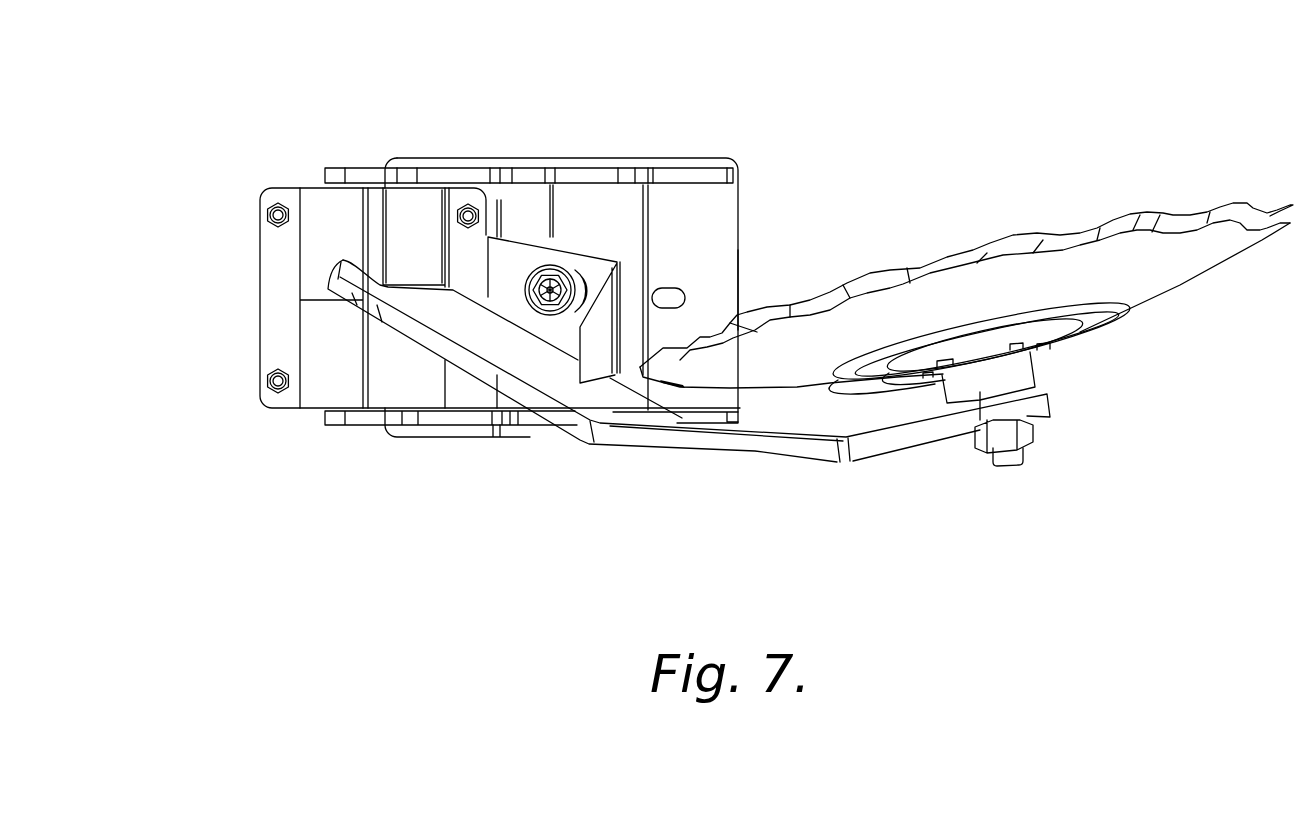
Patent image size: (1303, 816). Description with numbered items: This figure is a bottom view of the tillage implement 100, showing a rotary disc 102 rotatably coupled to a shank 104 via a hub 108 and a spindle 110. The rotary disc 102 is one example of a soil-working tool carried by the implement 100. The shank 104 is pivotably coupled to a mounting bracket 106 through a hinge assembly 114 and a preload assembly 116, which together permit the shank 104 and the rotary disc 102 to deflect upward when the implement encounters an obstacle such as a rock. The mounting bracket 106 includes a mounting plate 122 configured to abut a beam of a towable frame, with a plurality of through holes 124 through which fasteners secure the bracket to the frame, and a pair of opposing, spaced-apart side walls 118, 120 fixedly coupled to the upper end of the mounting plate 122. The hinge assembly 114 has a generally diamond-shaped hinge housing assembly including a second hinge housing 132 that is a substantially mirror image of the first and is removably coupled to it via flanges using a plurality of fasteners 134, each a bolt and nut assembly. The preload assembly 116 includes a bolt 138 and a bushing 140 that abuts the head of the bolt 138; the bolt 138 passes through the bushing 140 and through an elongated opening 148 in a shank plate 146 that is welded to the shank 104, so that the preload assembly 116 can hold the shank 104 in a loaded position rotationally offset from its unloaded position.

The tillage implement 100 is at (170, 104).
The rotary disc 102 is at (1163, 268).
The shank 104 is at (658, 437).
The mounting bracket 106 is at (728, 282).
The hub 108 is at (1022, 373).
The spindle 110 is at (1028, 433).
The hinge assembly 114 is at (222, 299).
The preload assembly 116 is at (531, 207).
The side wall 118 is at (358, 420).
The side wall 120 is at (362, 177).
The mounting plate 122 is at (723, 233).
The through holes 124 is at (673, 298).
The second hinge housing 132 is at (404, 212).
The fasteners 134 is at (264, 216).
The bolt 138 is at (550, 304).
The bushing 140 is at (562, 267).
The shank plate 146 is at (515, 282).
The elongated opening 148 is at (588, 278).